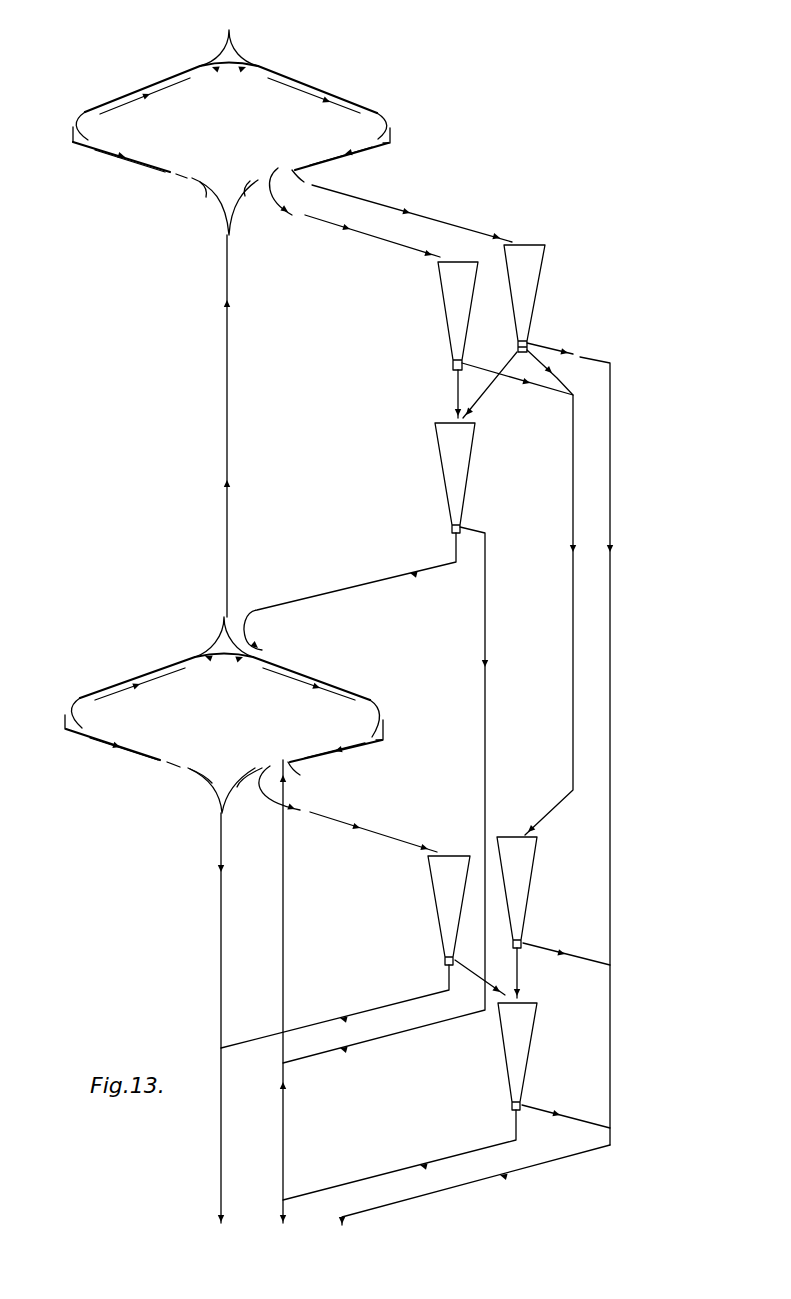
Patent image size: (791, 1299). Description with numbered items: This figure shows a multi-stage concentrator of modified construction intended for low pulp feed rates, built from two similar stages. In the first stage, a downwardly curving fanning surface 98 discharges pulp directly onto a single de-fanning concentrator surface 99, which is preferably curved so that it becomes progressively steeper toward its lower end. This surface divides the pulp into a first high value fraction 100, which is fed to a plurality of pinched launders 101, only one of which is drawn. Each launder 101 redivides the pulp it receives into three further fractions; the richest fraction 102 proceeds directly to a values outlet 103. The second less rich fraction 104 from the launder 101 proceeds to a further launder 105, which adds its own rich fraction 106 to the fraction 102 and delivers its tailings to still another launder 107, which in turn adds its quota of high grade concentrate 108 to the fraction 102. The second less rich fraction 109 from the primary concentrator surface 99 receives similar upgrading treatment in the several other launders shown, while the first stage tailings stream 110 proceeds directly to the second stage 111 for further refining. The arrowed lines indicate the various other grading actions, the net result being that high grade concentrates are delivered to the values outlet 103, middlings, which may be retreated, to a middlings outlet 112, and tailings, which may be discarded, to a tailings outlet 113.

The fanning surface 98 is at (330, 90).
The de-fanning concentrator surface 99 is at (337, 152).
The first high value fraction 100 is at (385, 207).
The pinched launder 101 is at (524, 298).
The richest fraction 102 is at (580, 357).
The values outlet 103 is at (345, 1215).
The second less rich fraction 104 is at (558, 380).
The launder 105 is at (517, 892).
The rich fraction 106 is at (545, 948).
The launder 107 is at (517, 1056).
The high grade concentrate 108 is at (543, 1107).
The second less rich fraction 109 is at (375, 240).
The first stage tailings stream 110 is at (232, 388).
The second stage 111 is at (224, 715).
The middlings outlet 112 is at (283, 1210).
The tailings outlet 113 is at (221, 1185).